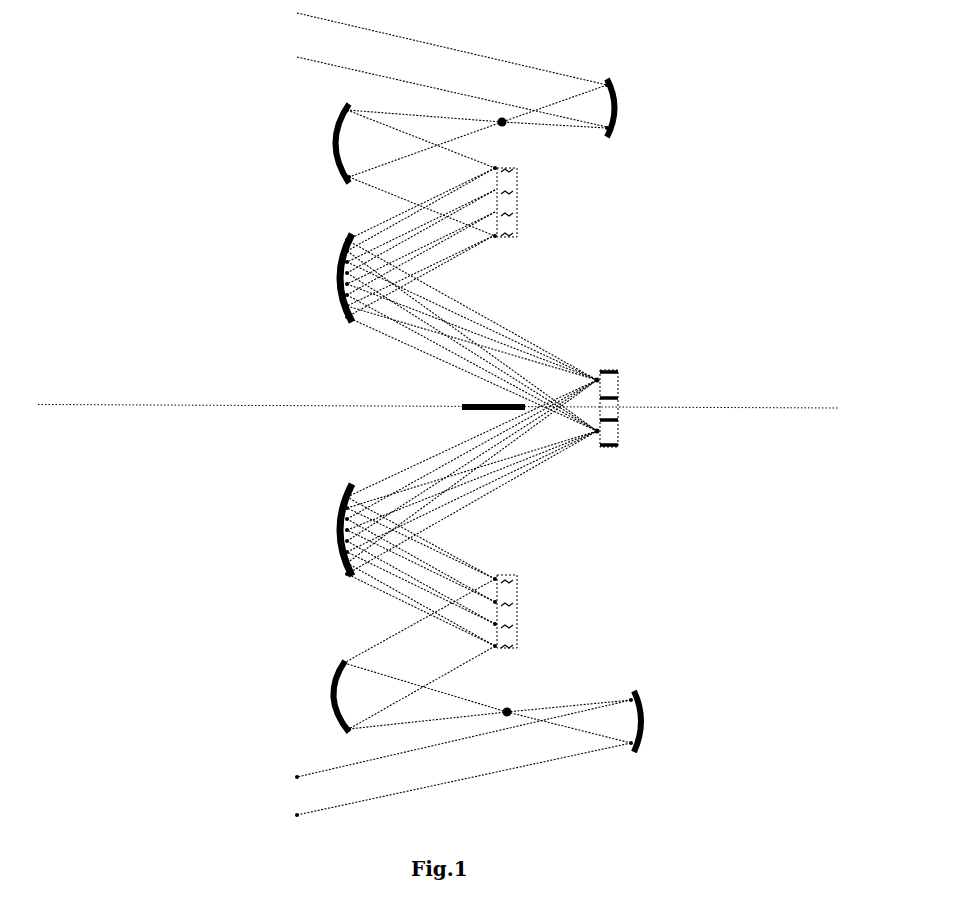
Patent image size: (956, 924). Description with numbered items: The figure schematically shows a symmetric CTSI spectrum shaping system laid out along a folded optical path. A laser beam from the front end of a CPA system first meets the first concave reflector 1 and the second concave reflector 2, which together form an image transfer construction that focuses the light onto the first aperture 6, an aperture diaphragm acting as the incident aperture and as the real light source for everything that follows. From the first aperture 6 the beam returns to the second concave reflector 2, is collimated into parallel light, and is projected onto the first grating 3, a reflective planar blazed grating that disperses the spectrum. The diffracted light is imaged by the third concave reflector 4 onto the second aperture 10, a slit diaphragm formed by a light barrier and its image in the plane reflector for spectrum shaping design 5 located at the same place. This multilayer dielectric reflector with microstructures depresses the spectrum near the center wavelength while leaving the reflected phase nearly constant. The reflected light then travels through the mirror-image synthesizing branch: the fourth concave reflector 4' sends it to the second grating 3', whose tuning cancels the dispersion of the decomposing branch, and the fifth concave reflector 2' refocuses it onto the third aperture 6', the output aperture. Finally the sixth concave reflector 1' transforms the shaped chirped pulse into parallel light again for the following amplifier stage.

The first concave reflector 1 is at (628, 108).
The second concave reflector 2 is at (328, 143).
The first grating 3 is at (522, 202).
The third concave reflector 4 is at (330, 278).
The plane reflector for spectrum shaping design 5 is at (626, 408).
The first aperture 6 is at (501, 138).
The second aperture 10 is at (468, 408).
The fourth concave reflector 4' is at (322, 530).
The second grating 3' is at (528, 611).
The fifth concave reflector 2' is at (319, 696).
The third aperture 6' is at (516, 698).
The sixth concave reflector 1' is at (658, 718).